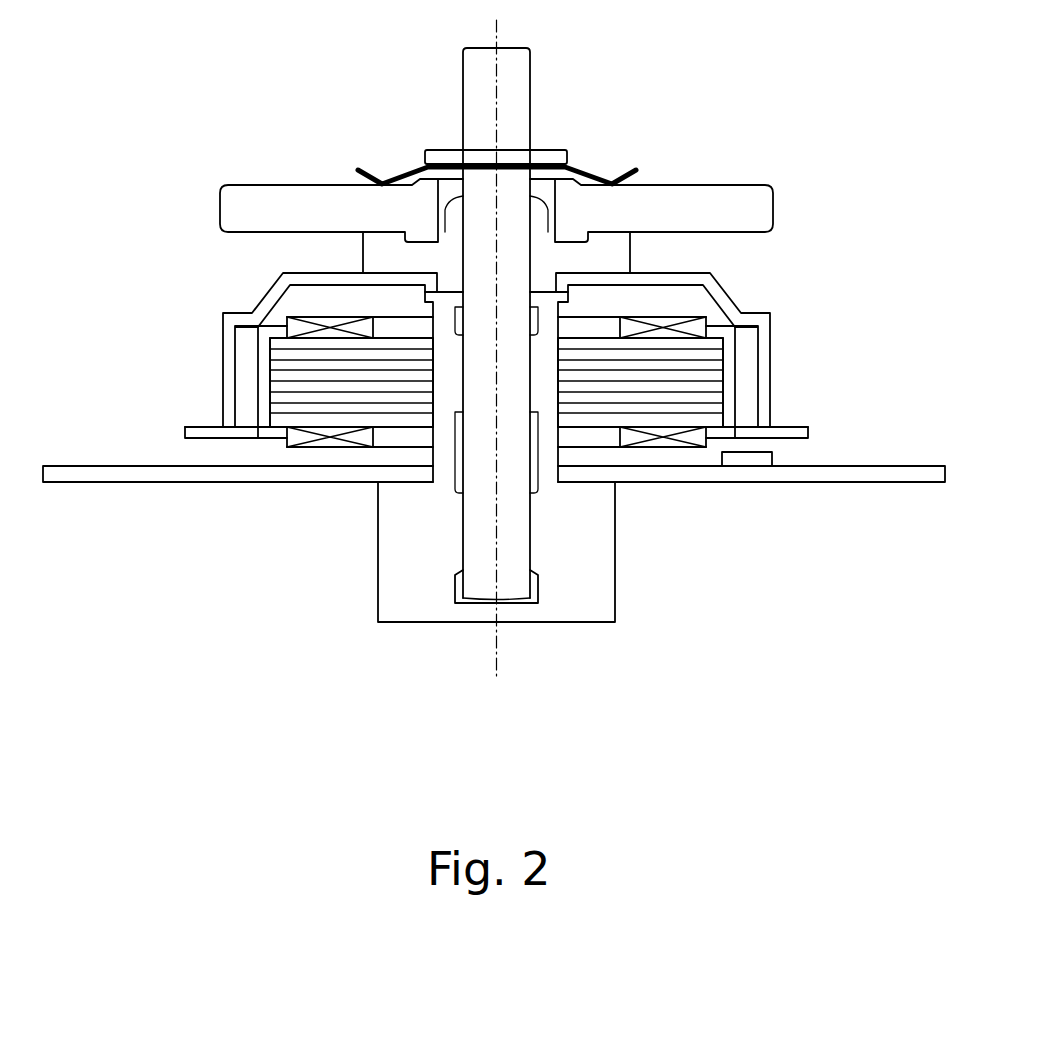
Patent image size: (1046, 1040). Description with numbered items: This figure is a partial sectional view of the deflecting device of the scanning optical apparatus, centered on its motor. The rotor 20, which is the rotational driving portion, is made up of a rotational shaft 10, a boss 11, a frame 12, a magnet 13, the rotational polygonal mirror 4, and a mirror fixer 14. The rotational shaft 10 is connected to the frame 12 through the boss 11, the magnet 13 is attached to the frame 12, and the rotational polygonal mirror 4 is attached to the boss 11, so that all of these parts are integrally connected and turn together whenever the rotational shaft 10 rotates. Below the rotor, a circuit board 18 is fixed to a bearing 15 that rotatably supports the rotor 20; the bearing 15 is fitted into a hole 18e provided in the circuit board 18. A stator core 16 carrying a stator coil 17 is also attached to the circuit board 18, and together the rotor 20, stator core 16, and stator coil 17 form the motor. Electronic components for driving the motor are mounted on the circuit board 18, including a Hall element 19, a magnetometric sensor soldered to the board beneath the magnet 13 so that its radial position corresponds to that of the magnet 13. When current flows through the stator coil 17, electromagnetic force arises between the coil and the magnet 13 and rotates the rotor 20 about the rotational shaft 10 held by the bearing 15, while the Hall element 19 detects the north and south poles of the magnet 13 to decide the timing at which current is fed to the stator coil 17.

The rotational shaft 10 is at (515, 93).
The mirror fixer 14 is at (548, 155).
The rotational polygonal mirror 4 is at (748, 210).
The boss 11 is at (615, 260).
The frame 12 is at (765, 337).
The magnet 13 is at (748, 368).
The stator core 16 is at (700, 398).
The stator coil 17 is at (655, 443).
The hole 18e is at (428, 475).
The circuit board 18 is at (893, 478).
The Hall element 19 is at (745, 466).
The bearing 15 is at (572, 607).
The rotor 20 is at (905, 13).